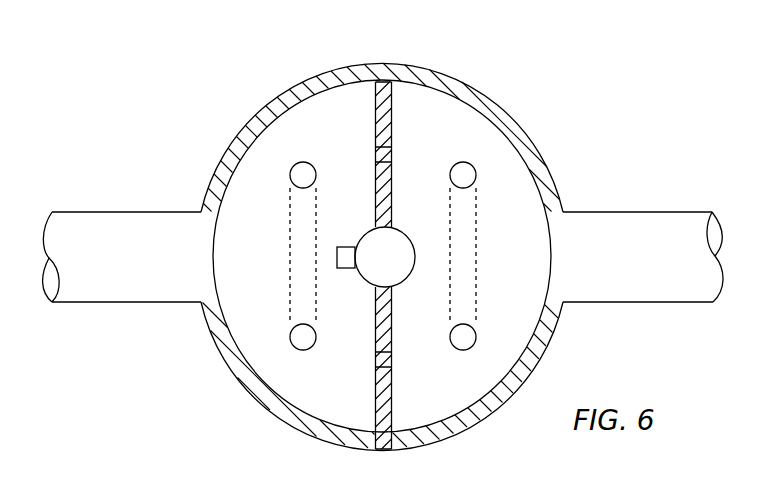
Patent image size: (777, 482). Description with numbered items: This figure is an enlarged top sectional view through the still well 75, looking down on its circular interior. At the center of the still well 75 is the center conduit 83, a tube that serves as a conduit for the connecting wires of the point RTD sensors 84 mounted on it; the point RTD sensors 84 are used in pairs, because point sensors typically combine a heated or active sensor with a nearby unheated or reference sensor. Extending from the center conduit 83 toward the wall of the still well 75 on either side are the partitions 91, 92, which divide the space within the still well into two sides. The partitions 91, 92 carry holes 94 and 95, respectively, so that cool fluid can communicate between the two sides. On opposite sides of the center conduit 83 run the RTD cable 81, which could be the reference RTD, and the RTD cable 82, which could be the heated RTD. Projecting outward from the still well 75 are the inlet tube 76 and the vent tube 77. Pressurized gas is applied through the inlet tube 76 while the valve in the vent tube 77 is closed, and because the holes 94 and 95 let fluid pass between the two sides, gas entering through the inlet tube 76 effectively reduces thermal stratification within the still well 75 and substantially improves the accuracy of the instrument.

The still well 75 is at (278, 96).
The inlet tube 76 is at (638, 212).
The vent tube 77 is at (127, 212).
The RTD cable 81 is at (475, 170).
The RTD cable 82 is at (291, 170).
The center conduit 83 is at (366, 229).
The point RTD sensor 84 is at (337, 258).
The partition 91 is at (393, 122).
The partition 92 is at (375, 398).
The hole 94 is at (393, 152).
The hole 95 is at (393, 360).